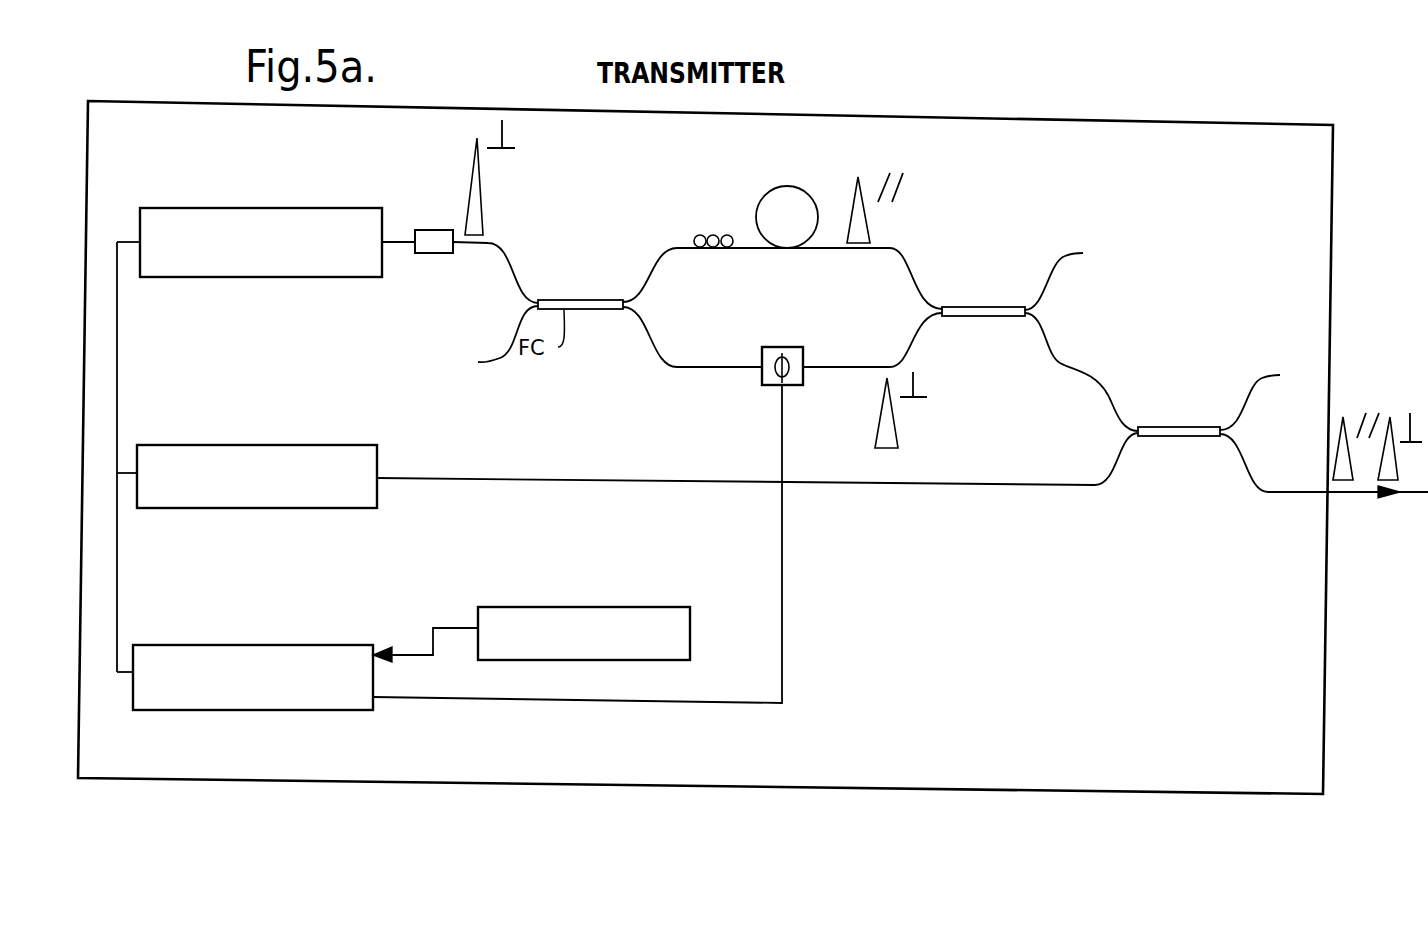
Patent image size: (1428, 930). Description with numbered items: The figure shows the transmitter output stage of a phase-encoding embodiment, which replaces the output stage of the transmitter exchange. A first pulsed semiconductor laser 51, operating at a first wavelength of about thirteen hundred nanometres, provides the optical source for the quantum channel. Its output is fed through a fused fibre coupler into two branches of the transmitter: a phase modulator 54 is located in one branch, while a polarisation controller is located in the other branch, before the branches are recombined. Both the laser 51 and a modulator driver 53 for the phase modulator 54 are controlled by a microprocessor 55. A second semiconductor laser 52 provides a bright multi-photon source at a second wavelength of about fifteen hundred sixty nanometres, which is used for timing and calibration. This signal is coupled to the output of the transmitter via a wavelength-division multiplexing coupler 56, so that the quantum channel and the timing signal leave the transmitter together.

The first pulsed semiconductor laser 51 is at (183, 208).
The second semiconductor laser 52 is at (380, 462).
The modulator driver 53 is at (333, 645).
The phase modulator 54 is at (762, 385).
The microprocessor 55 is at (692, 625).
The WDM coupler 56 is at (1175, 427).